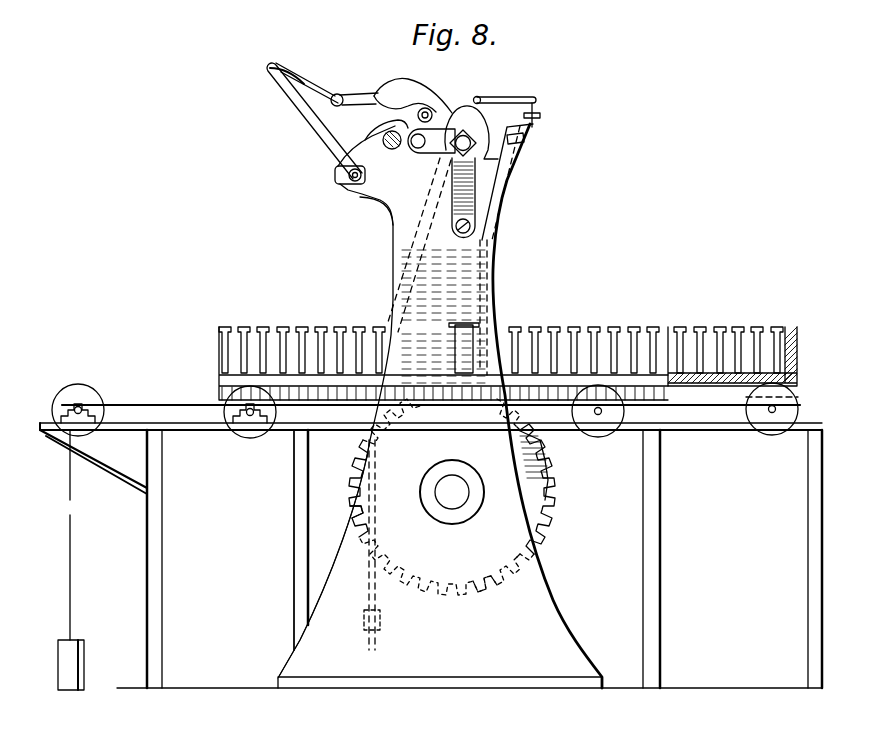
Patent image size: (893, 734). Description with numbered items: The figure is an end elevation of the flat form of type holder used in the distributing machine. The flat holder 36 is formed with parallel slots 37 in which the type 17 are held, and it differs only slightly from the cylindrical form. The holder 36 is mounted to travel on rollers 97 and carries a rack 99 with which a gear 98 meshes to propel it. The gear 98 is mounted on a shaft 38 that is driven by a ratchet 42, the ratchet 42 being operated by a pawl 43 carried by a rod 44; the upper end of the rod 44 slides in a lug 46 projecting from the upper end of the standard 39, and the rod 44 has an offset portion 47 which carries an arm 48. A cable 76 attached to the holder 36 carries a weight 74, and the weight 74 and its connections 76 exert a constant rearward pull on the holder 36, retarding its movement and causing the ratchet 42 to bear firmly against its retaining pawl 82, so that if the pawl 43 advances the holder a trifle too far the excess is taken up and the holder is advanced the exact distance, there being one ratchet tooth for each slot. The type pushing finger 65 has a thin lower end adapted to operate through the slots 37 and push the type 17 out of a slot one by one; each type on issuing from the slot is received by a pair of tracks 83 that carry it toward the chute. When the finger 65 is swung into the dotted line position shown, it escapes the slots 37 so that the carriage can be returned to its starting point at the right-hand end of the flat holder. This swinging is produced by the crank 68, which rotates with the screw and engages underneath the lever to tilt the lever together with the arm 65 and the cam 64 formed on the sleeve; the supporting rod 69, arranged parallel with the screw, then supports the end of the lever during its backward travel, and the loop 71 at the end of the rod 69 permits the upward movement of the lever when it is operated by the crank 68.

The loop 71 is at (325, 93).
The supporting rod 69 is at (340, 95).
The crank 68 is at (384, 98).
The cam 64 is at (462, 108).
The arm 48 is at (478, 97).
The offset portion 47 is at (515, 98).
The lug 46 is at (527, 131).
The type pushing arm 65 is at (392, 285).
The tracks 83 is at (470, 330).
The type 17 is at (302, 327).
The flat holder 36 is at (674, 326).
The slots 37 is at (741, 321).
The cable 76 is at (165, 403).
The rollers 97 is at (250, 438).
The rack 99 is at (323, 396).
The ratchet 42 is at (545, 482).
The gear 98 is at (548, 508).
The shaft 38 is at (452, 492).
The pawl 43 is at (352, 523).
The standard 39 is at (357, 582).
The rod 44 is at (380, 605).
The retaining pawl 82 is at (497, 572).
The weight 74 is at (82, 681).